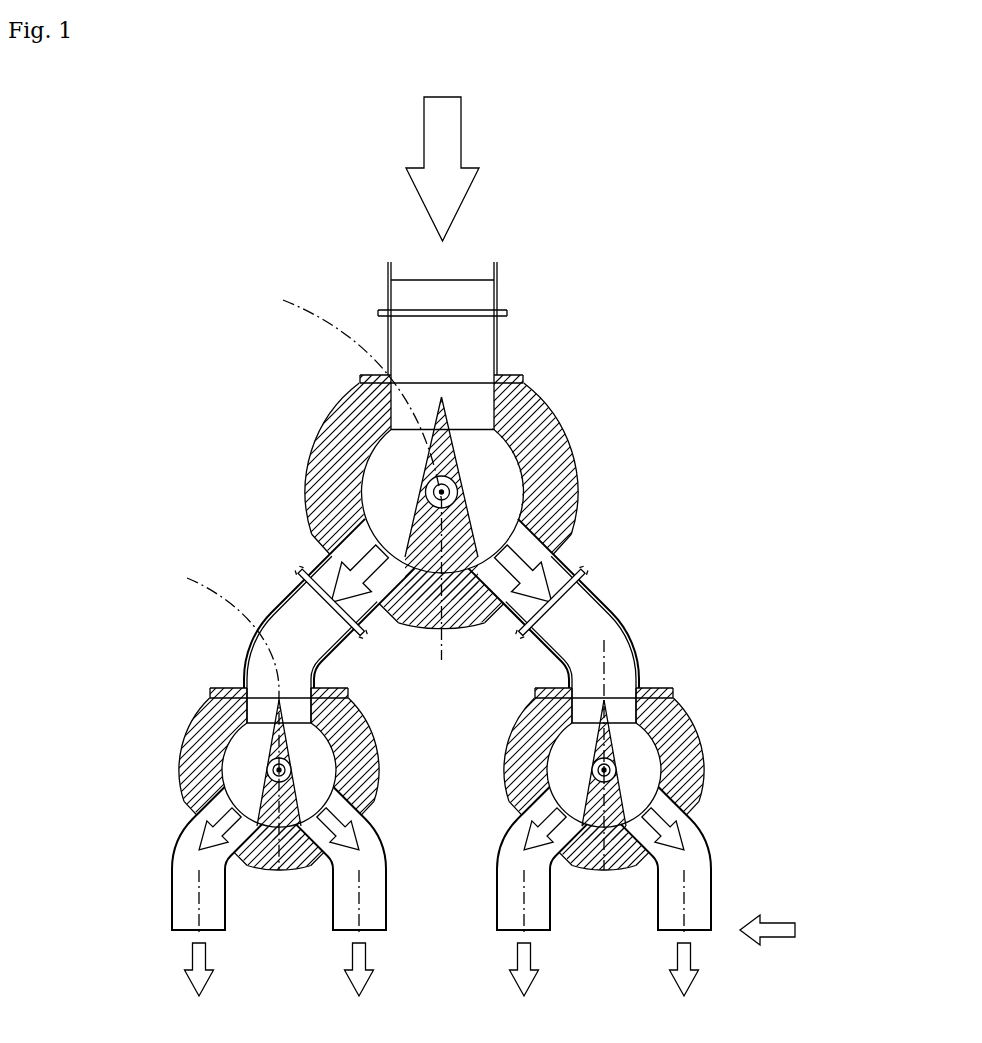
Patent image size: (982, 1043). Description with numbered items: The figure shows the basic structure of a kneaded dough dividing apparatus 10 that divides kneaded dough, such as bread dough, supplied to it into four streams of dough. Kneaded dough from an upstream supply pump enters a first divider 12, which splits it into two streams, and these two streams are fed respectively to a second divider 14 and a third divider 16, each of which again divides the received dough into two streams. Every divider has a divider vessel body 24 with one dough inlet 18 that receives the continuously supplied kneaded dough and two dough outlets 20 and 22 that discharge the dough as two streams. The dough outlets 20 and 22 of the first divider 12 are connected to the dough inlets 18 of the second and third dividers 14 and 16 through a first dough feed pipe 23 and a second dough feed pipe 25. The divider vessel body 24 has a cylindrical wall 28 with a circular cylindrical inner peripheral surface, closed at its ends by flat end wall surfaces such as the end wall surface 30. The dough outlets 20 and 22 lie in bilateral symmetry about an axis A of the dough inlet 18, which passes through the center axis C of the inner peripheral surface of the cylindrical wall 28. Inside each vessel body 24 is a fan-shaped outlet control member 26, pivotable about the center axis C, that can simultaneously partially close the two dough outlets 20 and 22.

The kneaded dough dividing apparatus 10 is at (575, 232).
The first divider 12 is at (313, 403).
The second divider 14 is at (170, 773).
The third divider 16 is at (727, 767).
The dough inlet 18 is at (492, 408).
The dough outlet 20 is at (322, 533).
The dough outlet 22 is at (552, 521).
The first dough feed pipe 23 is at (286, 598).
The divider vessel body 24 is at (575, 450).
The second dough feed pipe 25 is at (600, 595).
The outlet control member 26 is at (461, 502).
The cylindrical wall 28 is at (577, 468).
The flat end wall surface 30 is at (388, 465).
The axis of the dough inlet A is at (387, 570).
The center axis C is at (442, 492).